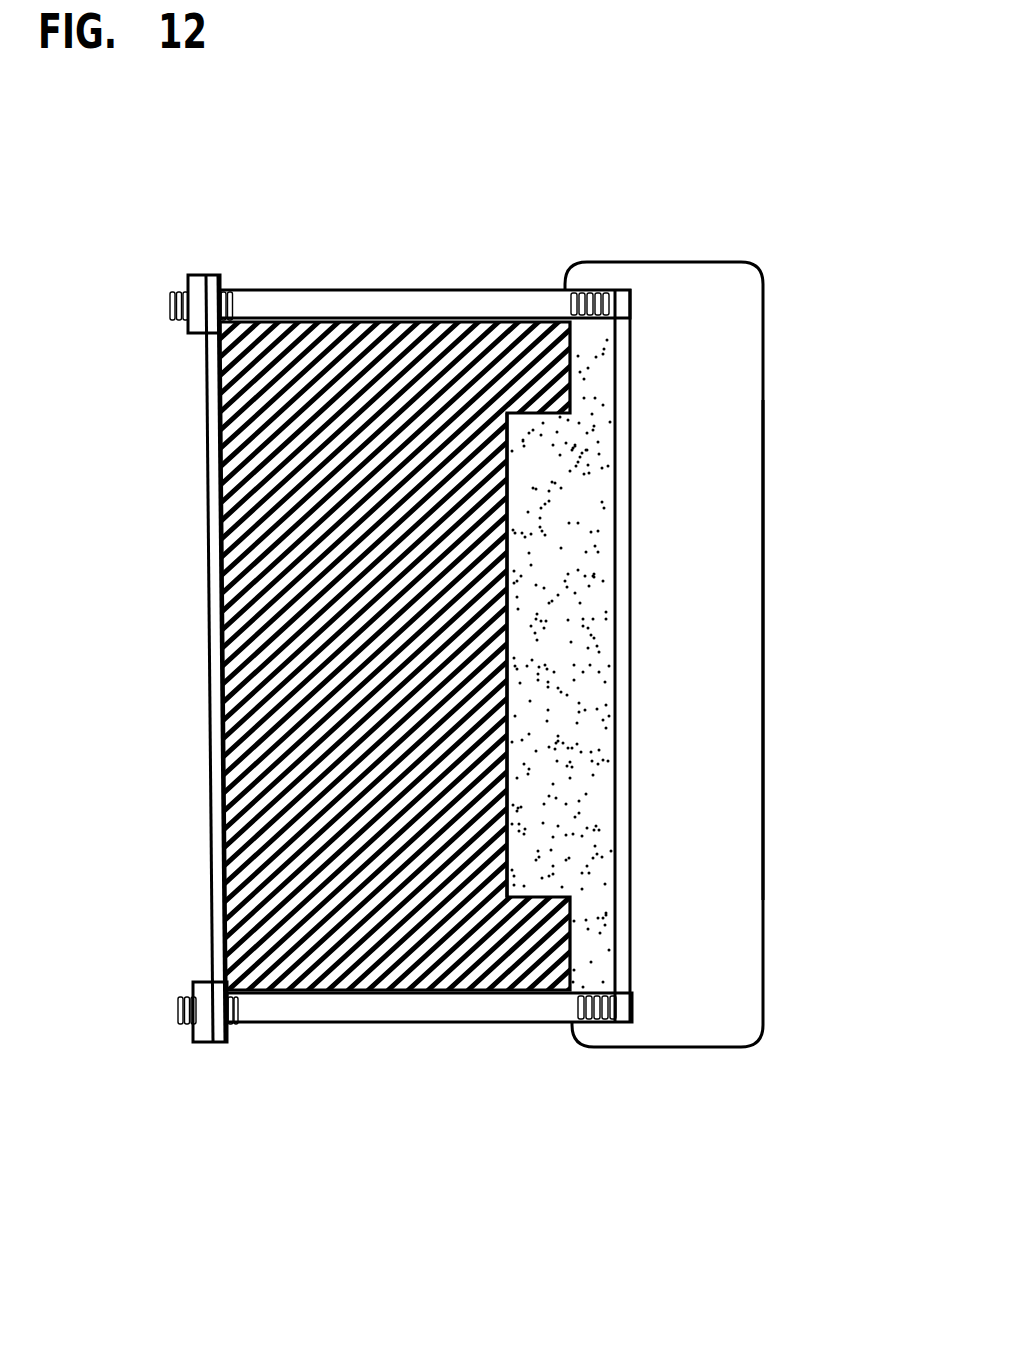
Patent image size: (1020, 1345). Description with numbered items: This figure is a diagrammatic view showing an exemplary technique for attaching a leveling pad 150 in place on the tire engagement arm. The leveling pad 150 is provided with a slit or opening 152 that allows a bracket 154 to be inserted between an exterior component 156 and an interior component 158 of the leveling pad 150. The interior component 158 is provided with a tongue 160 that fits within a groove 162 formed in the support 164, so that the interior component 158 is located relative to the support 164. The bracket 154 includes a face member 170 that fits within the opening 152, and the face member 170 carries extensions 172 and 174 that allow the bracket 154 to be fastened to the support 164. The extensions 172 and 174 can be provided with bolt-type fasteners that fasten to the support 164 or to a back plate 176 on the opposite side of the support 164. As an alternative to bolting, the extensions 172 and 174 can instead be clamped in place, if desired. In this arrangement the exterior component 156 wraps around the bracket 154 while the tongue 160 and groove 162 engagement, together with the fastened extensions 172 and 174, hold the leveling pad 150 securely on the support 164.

The leveling pad 150 is at (718, 671).
The slit or opening 152 is at (605, 1075).
The bracket 154 is at (628, 780).
The exterior component 156 is at (730, 550).
The interior component 158 is at (560, 546).
The tongue 160 is at (523, 423).
The groove 162 is at (508, 455).
The support 164 is at (258, 352).
The face member 170 is at (628, 710).
The extension 172 is at (294, 305).
The extension 174 is at (323, 1010).
The back plate 176 is at (208, 610).